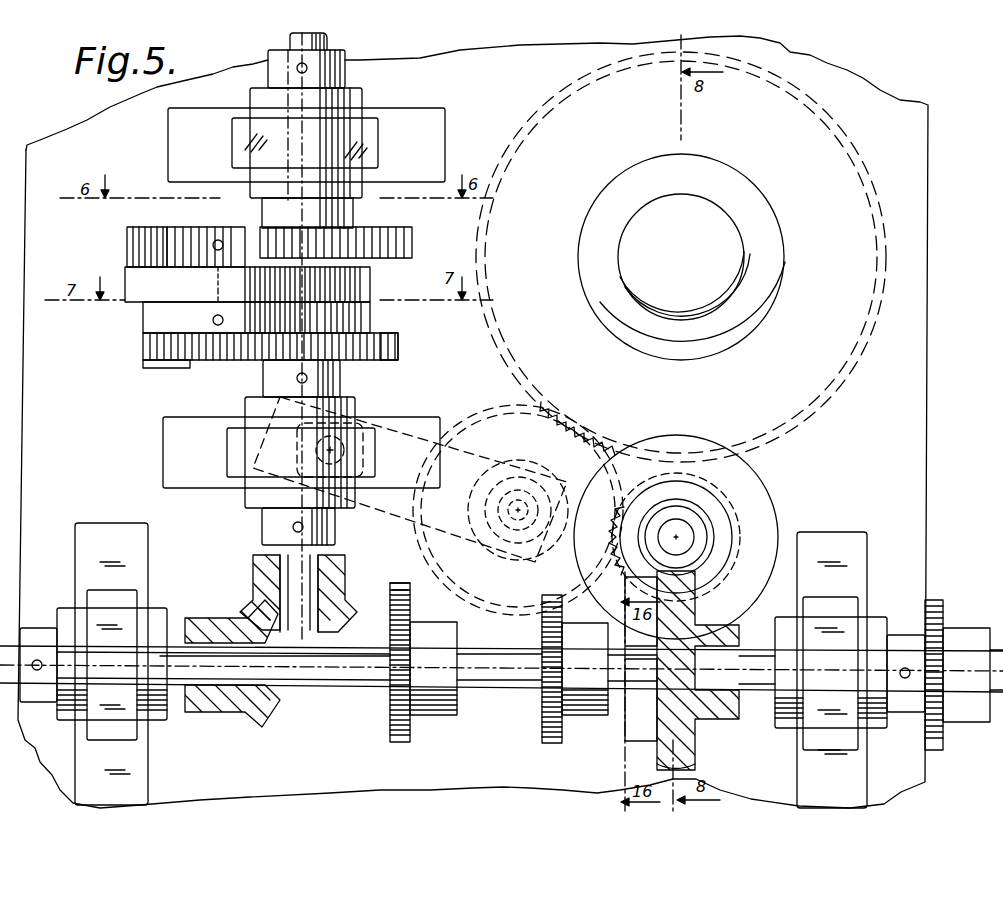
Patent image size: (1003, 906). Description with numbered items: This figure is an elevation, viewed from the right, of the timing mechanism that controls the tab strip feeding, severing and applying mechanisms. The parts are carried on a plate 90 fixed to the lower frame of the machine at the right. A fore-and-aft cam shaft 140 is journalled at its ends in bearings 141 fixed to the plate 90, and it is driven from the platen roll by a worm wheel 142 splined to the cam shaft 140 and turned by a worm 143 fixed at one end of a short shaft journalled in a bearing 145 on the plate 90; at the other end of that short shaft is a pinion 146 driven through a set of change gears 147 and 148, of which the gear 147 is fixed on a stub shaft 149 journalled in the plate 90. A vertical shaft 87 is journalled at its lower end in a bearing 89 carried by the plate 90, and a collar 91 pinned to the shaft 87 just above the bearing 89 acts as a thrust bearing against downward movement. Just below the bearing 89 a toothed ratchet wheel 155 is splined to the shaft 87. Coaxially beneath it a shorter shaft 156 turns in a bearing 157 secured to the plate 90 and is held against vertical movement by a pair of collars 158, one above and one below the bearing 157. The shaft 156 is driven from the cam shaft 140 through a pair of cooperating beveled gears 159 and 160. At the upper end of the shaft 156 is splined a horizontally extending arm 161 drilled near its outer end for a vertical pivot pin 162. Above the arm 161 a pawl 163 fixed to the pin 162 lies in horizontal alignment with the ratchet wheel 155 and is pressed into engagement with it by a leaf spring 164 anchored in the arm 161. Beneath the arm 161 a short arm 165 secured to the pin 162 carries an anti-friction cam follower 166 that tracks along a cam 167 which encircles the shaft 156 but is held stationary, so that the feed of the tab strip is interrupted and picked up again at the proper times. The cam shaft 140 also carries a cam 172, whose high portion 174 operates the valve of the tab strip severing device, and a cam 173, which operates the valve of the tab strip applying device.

The vertical shaft 87 is at (328, 46).
The bearing 89 is at (372, 138).
The plate 90 is at (33, 178).
The collar 91 is at (346, 78).
The cam shaft 140 is at (347, 684).
The bearings 141 is at (95, 602).
The worm wheel 142 is at (693, 731).
The worm 143 is at (708, 533).
The bearing 145 is at (693, 533).
The pinion 146 is at (635, 494).
The change gear 147 is at (461, 416).
The change gear 148 is at (877, 327).
The stub shaft 149 is at (512, 482).
The toothed ratchet wheel 155 is at (396, 240).
The shaft 156 is at (312, 575).
The bearing 157 is at (237, 460).
The collars 158 is at (341, 388).
The beveled gear 159 is at (206, 704).
The beveled gear 160 is at (254, 576).
The arm 161 is at (137, 290).
The pivot pin 162 is at (216, 285).
The pawl 163 is at (205, 235).
The leaf spring 164 is at (162, 245).
The short arm 165 is at (203, 350).
The anti-friction cam follower 166 is at (142, 358).
The cam 167 is at (399, 348).
The cam 172 is at (397, 720).
The cam 173 is at (546, 722).
The high portion 174 is at (400, 584).